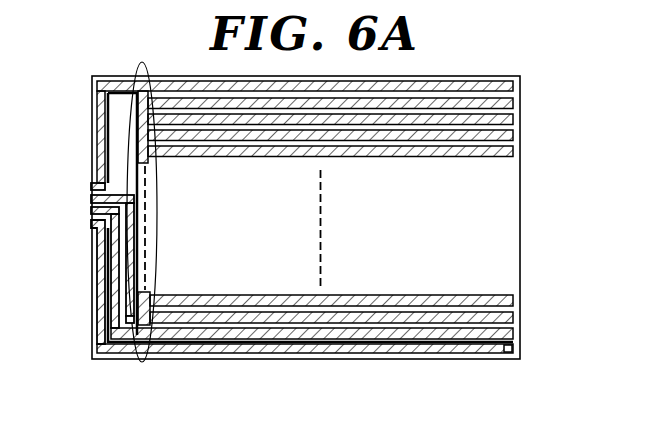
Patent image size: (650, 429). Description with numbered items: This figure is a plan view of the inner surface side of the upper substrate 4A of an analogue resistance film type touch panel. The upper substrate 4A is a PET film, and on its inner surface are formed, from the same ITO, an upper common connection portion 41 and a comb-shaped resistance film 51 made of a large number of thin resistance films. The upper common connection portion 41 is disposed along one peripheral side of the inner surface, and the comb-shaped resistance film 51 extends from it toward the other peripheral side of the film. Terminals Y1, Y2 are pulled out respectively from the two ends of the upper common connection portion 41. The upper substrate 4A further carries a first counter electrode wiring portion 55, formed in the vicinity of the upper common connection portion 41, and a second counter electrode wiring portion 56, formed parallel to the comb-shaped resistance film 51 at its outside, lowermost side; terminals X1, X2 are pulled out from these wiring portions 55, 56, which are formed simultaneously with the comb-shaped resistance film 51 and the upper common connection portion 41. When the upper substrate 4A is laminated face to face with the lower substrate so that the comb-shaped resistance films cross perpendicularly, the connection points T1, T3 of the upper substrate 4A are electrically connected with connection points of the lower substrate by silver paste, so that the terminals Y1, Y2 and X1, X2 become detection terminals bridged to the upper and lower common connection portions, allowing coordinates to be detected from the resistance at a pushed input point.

The upper substrate 4A is at (521, 196).
The upper common connection portion 41 is at (129, 70).
The comb-shaped resistance film 51 is at (489, 82).
The wiring portion (second counter electrode wiring portion) 56 is at (330, 357).
The wiring portion (first counter electrode wiring portion) 55 is at (111, 287).
The terminal Y1 is at (93, 184).
The terminal X1 is at (94, 198).
The terminal Y2 is at (92, 212).
The terminal X2 is at (92, 226).
The connection point T1 is at (130, 325).
The connection point T3 is at (507, 353).